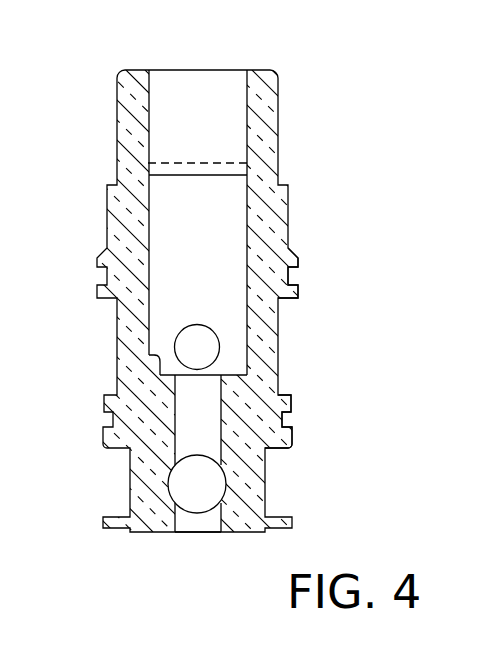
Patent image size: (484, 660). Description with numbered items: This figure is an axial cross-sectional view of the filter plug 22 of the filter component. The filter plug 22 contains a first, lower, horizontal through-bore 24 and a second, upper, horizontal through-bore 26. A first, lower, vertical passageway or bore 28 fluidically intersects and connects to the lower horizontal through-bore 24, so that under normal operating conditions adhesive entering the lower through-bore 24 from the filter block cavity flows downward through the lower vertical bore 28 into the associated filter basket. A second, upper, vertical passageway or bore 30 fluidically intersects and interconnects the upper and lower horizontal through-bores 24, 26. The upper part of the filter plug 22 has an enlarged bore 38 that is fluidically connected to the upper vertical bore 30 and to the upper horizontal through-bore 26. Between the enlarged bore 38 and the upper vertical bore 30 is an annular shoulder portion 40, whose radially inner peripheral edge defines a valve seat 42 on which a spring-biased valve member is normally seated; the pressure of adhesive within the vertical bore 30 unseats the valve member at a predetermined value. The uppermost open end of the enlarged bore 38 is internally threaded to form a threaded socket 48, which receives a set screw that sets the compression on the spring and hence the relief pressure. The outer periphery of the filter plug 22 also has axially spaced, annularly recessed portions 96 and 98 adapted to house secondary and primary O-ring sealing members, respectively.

The filter plug 22 is at (278, 132).
The first, lower, horizontal through-bore 24 is at (212, 492).
The second, upper, horizontal through-bore 26 is at (214, 346).
The first, lower, vertical passageway or bore 28 is at (203, 525).
The second, upper, vertical passageway or bore 30 is at (218, 412).
The enlarged bore 38 is at (229, 266).
The annular shoulder portion 40 is at (149, 355).
The valve seat 42 is at (176, 376).
The threaded socket 48 is at (247, 110).
The annularly recessed portion 96 is at (290, 281).
The annularly recessed portion 98 is at (283, 423).